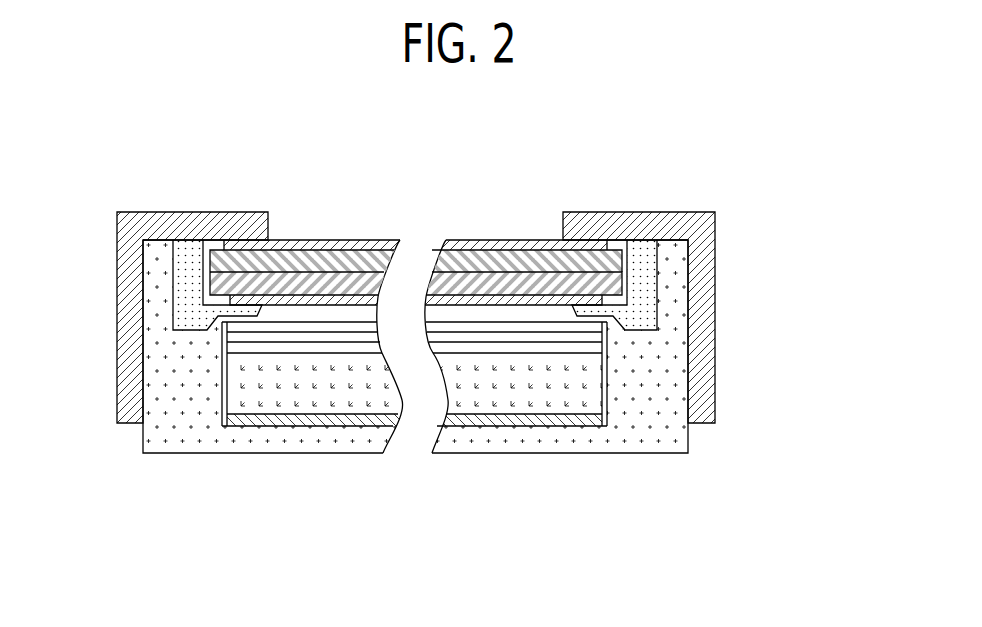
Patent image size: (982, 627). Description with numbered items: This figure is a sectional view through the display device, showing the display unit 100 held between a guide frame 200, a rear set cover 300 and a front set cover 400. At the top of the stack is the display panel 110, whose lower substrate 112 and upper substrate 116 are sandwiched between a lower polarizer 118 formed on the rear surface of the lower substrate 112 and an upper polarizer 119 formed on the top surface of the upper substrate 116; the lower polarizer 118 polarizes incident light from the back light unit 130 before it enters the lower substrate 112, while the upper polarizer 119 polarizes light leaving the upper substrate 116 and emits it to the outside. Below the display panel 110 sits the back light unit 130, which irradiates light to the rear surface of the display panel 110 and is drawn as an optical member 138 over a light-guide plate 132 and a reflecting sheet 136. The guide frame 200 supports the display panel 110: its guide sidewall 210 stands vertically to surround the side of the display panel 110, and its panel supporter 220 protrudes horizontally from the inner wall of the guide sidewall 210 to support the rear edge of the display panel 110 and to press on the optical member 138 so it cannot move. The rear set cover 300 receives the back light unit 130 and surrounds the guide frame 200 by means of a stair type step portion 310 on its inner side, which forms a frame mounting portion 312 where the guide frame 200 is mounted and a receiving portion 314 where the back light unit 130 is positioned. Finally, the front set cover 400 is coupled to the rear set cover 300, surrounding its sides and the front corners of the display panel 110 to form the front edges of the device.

The display unit 100 is at (416, 376).
The display panel 110 is at (416, 356).
The lower substrate 112 is at (497, 287).
The upper substrate 116 is at (543, 262).
The lower polarizer 118 is at (300, 300).
The upper polarizer 119 is at (362, 243).
The back light unit 130 is at (414, 437).
The light-guide plate 132 is at (332, 408).
The reflecting sheet 136 is at (280, 513).
The optical member 138 is at (265, 327).
The guide frame 200 is at (505, 291).
The guide sidewall 210 is at (647, 285).
The panel supporter 220 is at (593, 310).
The rear set cover 300 is at (688, 455).
The stair type step portion 310 is at (397, 434).
The frame mounting portion 312 is at (176, 330).
The receiving portion 314 is at (223, 403).
The front set cover 400 is at (715, 212).